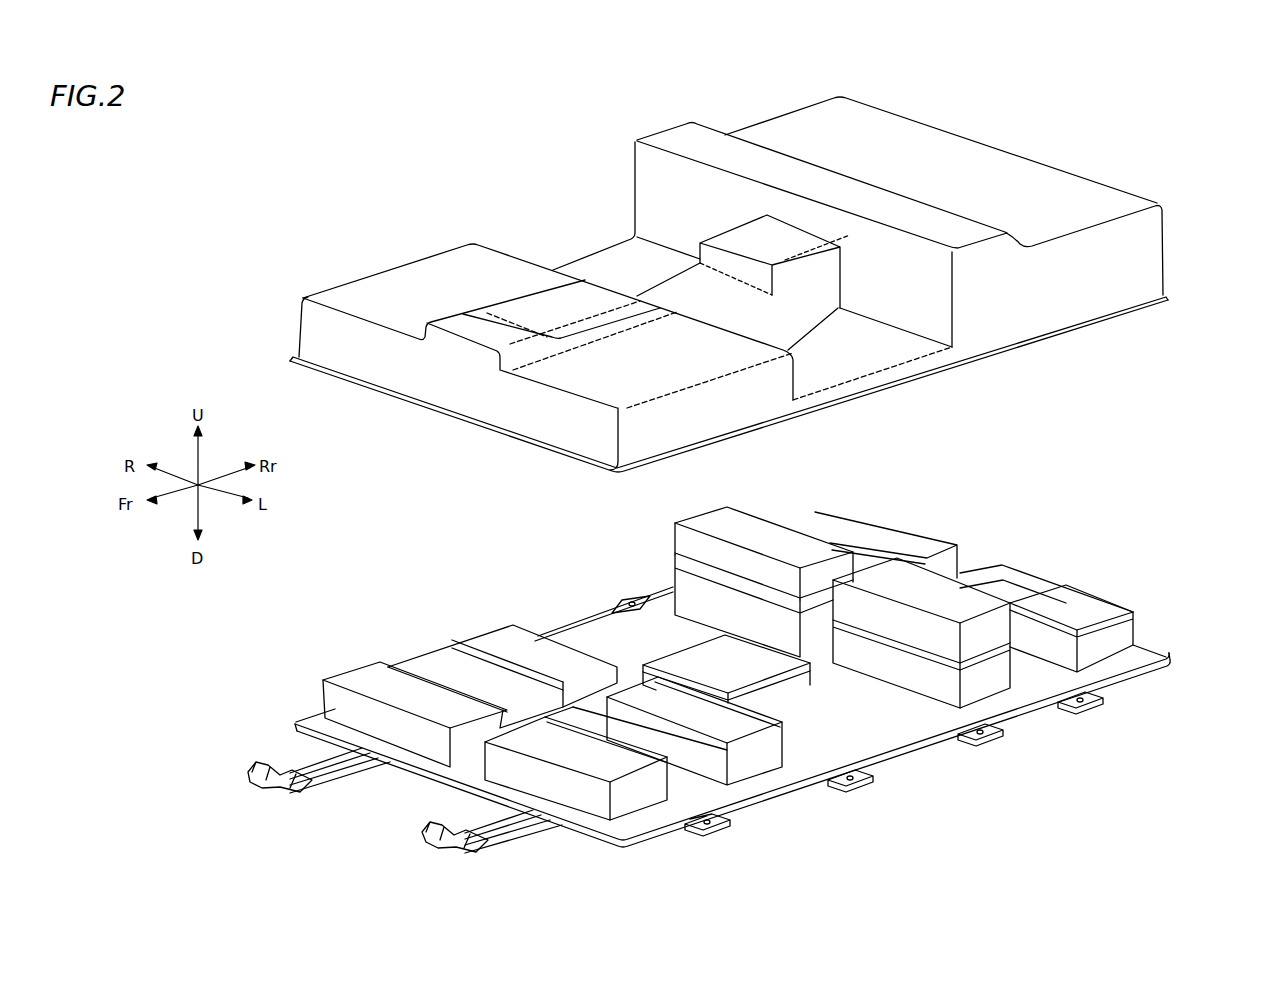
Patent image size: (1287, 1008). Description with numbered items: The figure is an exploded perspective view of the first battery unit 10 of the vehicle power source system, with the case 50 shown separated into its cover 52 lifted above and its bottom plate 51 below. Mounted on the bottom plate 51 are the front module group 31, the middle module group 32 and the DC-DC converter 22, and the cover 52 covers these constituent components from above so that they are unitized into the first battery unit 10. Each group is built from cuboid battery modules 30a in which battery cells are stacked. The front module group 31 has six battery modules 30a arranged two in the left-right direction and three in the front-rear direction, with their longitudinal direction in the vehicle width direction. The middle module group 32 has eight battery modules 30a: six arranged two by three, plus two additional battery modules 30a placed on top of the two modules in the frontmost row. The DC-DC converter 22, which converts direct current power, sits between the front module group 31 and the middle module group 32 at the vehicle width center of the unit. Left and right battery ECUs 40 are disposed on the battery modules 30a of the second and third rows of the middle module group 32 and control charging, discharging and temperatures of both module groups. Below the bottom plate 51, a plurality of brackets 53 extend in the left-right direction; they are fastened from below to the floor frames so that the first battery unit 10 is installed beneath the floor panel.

The first battery unit 10 is at (504, 163).
The DC-DC converter 22 is at (665, 656).
The battery module 30a is at (360, 683).
The front module group 31 is at (488, 643).
The middle module group 32 is at (801, 550).
The battery ECU 40 is at (960, 578).
The case 50 is at (1212, 388).
The bottom plate 51 is at (1148, 640).
The cover 52 is at (1098, 290).
The bracket 53 is at (1000, 734).